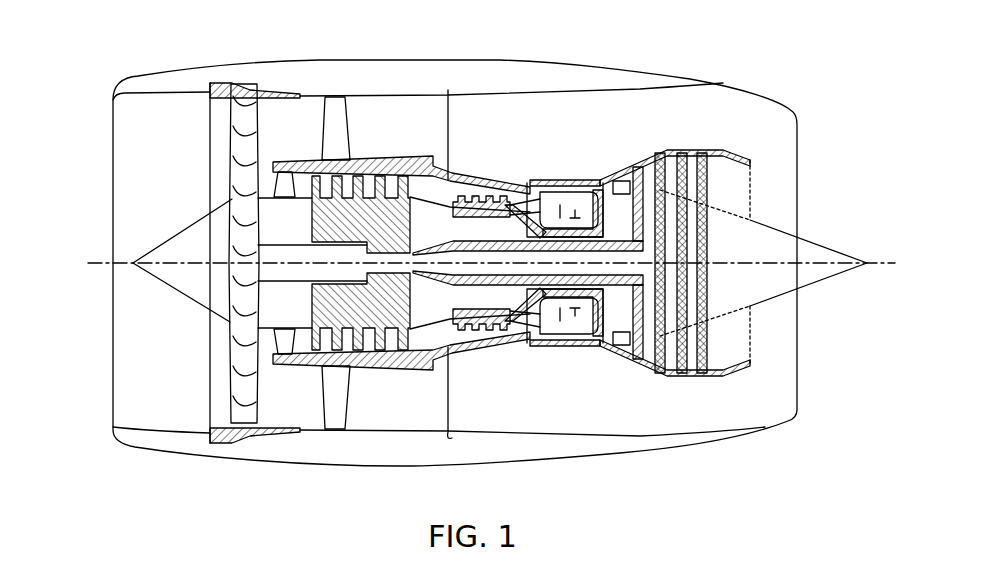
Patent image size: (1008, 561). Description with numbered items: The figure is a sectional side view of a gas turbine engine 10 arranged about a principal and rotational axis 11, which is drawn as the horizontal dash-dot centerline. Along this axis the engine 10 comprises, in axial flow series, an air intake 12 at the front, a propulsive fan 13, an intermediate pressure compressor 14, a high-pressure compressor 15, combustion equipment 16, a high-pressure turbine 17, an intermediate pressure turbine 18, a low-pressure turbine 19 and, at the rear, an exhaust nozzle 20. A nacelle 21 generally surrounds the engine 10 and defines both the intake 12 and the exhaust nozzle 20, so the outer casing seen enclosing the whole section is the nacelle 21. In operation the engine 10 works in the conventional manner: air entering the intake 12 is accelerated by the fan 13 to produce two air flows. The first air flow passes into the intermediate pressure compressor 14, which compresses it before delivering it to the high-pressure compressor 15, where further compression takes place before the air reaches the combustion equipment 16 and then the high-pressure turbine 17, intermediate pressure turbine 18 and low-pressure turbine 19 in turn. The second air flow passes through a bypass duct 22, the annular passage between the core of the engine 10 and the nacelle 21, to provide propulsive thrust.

The gas turbine engine 10 is at (97, 147).
The principal and rotational axis 11 is at (123, 260).
The air intake 12 is at (180, 92).
The propulsive fan 13 is at (227, 385).
The intermediate pressure compressor 14 is at (393, 363).
The high-pressure compressor 15 is at (483, 180).
The combustion equipment 16 is at (537, 340).
The high-pressure turbine 17 is at (597, 345).
The intermediate pressure turbine 18 is at (632, 177).
The low-pressure turbine 19 is at (653, 373).
The exhaust nozzle 20 is at (792, 420).
The nacelle 21 is at (615, 66).
The bypass duct 22 is at (418, 137).